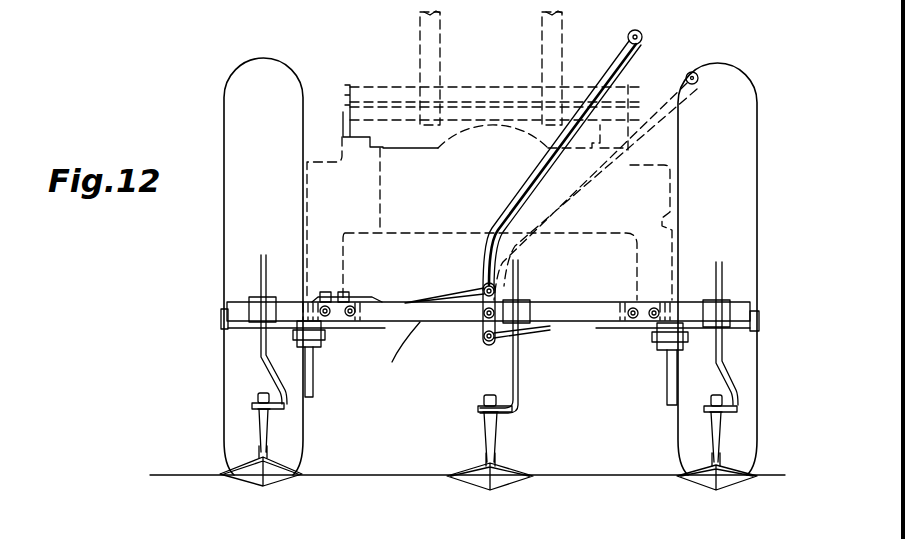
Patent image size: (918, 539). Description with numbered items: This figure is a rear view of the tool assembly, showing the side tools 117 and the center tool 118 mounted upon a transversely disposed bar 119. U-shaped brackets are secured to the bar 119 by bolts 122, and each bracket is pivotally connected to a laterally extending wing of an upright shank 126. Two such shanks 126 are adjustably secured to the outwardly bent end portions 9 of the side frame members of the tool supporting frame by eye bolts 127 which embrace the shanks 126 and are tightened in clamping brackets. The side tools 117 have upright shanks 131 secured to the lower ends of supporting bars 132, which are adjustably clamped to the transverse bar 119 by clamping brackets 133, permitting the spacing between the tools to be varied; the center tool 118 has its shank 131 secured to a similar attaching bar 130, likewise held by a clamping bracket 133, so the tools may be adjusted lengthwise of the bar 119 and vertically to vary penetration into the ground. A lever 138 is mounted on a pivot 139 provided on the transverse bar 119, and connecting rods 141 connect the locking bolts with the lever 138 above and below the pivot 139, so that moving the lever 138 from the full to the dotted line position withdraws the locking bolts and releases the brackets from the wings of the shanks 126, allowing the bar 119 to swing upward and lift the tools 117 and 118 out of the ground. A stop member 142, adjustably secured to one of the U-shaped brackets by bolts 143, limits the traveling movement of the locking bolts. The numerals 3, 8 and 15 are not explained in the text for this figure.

The tires 3 is at (228, 128).
The tool bar 8 is at (378, 325).
The outwardly bent end portions 9 is at (221, 319).
The section line indicator 15 is at (604, 296).
The side tools 117 is at (250, 478).
The center tool 118 is at (476, 480).
The transversely disposed bar 119 is at (396, 352).
The bolts 122 is at (350, 316).
The upright shank 126 is at (313, 394).
The eye bolts 127 is at (318, 341).
The attaching bar 130 is at (518, 388).
The shank 131 is at (262, 427).
The supporting bars 132 is at (262, 352).
The clamping brackets 133 is at (250, 298).
The lever 138 is at (537, 169).
The pivot 139 is at (484, 326).
The connecting rods 141 is at (458, 302).
The stop member 142 is at (360, 297).
The bolts 143 is at (343, 292).